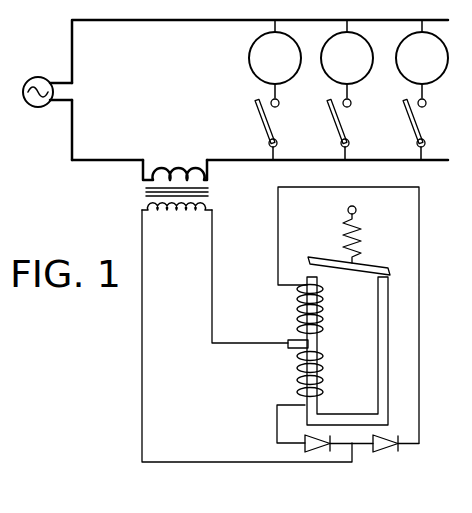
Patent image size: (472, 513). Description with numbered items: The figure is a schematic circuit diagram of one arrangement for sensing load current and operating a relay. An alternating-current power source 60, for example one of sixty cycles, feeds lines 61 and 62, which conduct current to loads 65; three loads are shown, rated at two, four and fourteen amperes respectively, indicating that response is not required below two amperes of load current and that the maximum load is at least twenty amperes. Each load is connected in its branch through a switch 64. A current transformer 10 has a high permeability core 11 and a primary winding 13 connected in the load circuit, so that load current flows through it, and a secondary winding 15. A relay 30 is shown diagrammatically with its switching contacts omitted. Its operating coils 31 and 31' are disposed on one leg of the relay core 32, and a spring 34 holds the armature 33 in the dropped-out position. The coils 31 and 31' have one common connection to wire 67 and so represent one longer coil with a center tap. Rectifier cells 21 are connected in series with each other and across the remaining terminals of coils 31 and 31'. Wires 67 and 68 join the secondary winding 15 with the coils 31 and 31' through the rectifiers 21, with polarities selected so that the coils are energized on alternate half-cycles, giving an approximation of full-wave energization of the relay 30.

The current transformer 10 is at (188, 186).
The high permeability core 11 is at (145, 190).
The primary winding 13 is at (177, 165).
The secondary winding 15 is at (173, 214).
The rectifier cells 21 is at (305, 450).
The relay 30 is at (348, 315).
The operating coil 31 is at (330, 309).
The operating coil 31' is at (333, 381).
The relay core 32 is at (388, 367).
The armature 33 is at (318, 258).
The spring 34 is at (365, 238).
The A.-C. power source 60 is at (40, 108).
The line 61 is at (185, 21).
The line 62 is at (243, 158).
The switch 64 is at (268, 120).
The loads 65 is at (249, 60).
The wire 67 is at (256, 343).
The wire 68 is at (144, 392).